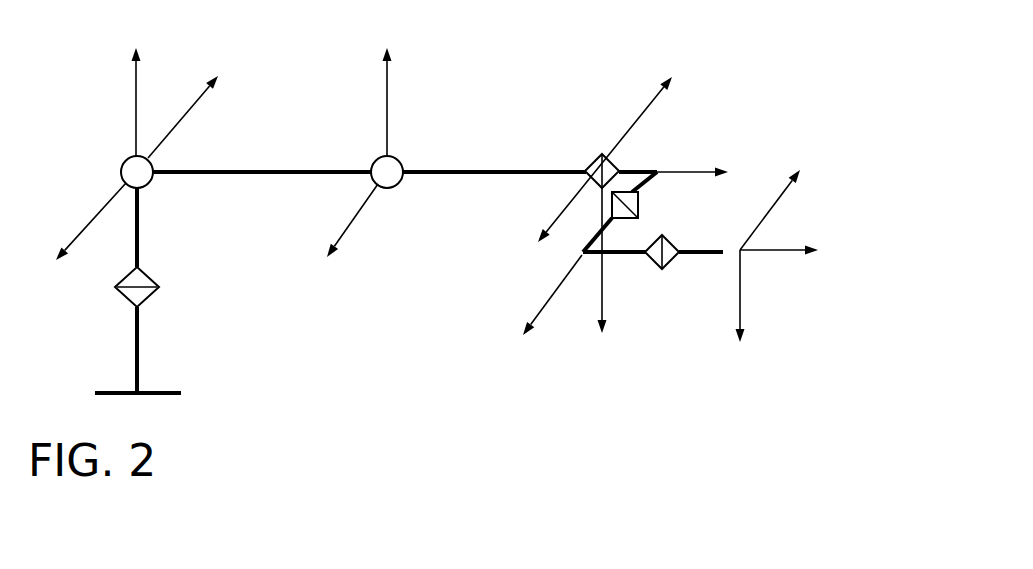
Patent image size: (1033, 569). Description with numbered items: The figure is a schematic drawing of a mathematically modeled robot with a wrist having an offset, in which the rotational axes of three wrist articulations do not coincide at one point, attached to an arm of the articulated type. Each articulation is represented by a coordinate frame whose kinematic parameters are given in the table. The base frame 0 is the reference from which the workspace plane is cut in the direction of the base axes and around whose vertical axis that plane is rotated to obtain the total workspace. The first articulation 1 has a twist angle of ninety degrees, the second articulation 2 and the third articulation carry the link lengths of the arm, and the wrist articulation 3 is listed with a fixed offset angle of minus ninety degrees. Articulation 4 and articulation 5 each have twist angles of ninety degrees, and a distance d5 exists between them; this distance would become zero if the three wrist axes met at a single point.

The base coordinate frame 0 is at (181, 111).
The articulation 1 is at (104, 288).
The articulation 2 is at (369, 154).
The articulation 3 is at (626, 212).
The articulation 4 is at (576, 270).
The articulation 5 is at (772, 262).